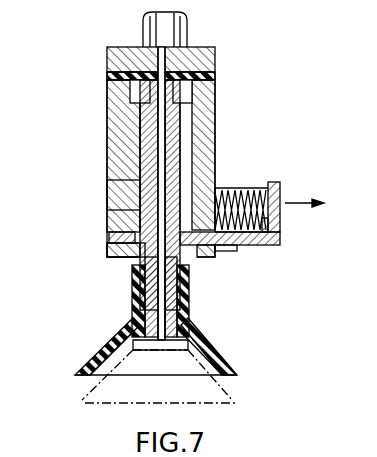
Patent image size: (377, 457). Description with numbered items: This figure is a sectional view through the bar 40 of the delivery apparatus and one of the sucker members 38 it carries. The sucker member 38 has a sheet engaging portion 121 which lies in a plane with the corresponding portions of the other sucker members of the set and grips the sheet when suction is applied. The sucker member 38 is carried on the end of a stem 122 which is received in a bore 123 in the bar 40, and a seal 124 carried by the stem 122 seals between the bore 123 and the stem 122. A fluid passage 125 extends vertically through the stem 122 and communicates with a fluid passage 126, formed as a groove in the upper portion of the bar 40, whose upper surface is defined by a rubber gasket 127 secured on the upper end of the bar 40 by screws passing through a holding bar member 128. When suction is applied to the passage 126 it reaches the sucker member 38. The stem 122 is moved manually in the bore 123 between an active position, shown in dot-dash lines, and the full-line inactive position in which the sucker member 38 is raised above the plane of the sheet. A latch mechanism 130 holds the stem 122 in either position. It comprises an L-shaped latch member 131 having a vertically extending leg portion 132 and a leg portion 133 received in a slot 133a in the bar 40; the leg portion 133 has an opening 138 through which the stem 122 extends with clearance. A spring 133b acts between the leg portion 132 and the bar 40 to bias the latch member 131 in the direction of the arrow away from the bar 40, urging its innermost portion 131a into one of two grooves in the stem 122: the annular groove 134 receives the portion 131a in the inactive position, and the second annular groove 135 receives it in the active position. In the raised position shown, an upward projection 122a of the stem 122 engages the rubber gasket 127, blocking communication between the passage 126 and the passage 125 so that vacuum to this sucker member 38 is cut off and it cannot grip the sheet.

The holding bar member 128 is at (192, 44).
The rubber gasket 127 is at (215, 70).
The fluid passage 126 is at (215, 77).
The upward projection 122a is at (107, 76).
The bar 40 is at (215, 134).
The fluid passage 125 is at (130, 100).
The seal 124 is at (148, 145).
The bore 123 is at (215, 108).
The sucker member 38 is at (188, 316).
The second annular groove 135 is at (107, 195).
The latch mechanism 130 is at (256, 186).
The opening 138 is at (222, 194).
The vertically extending leg portion 132 is at (280, 186).
The spring 133b is at (280, 225).
The L-shaped latch member 131 is at (280, 240).
The leg portion 133 is at (226, 246).
The slot 133a is at (109, 238).
The innermost portion 131a is at (125, 262).
The annular groove 134 is at (188, 270).
The stem 122 is at (189, 292).
The sheet engaging portion 121 is at (218, 366).